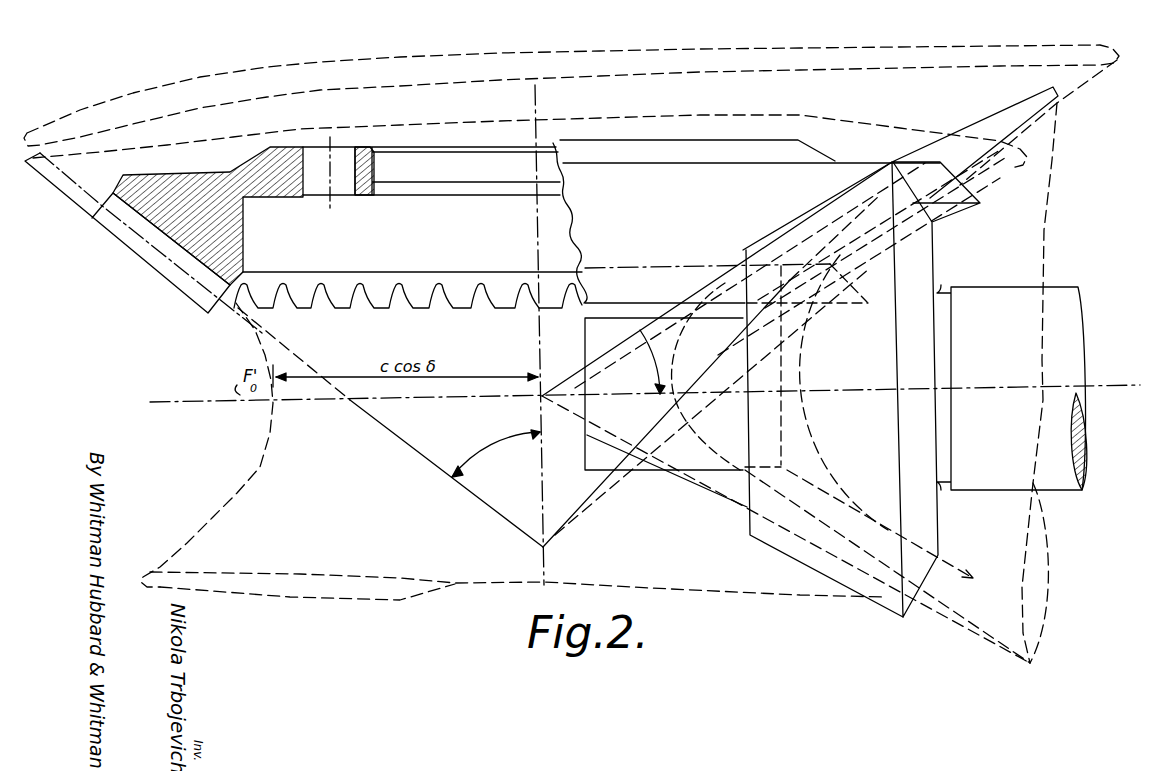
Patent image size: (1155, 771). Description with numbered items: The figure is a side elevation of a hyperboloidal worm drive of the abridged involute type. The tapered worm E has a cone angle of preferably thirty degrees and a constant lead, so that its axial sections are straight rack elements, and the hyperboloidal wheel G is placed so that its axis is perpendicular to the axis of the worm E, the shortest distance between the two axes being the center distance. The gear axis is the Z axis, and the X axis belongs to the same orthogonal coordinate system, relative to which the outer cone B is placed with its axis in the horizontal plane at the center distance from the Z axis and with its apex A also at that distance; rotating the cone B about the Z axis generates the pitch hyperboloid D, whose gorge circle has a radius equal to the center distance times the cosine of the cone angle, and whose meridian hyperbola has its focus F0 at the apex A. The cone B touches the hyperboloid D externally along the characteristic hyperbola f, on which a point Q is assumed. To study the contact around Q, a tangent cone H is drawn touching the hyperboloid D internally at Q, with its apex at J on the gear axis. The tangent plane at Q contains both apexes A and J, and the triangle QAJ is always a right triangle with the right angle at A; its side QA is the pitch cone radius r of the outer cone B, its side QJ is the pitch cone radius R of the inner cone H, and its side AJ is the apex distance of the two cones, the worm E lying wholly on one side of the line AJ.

The tangent cone H is at (772, 52).
The cone B is at (1055, 612).
The X axis X is at (652, 387).
The Z axis Z is at (545, 103).
The hyperboloidal wheel G is at (197, 305).
The pitch cone radius of the inner cone R is at (807, 490).
The apex of cone A is at (543, 392).
The pitch cone radius of the outer cone r is at (680, 326).
The characteristic hyperbola f is at (722, 356).
The focus of the meridian hyperbola F0 is at (836, 395).
The apex of the tangent cone J is at (538, 547).
The point on the characteristic hyperbola Q is at (836, 234).
The tapered worm E is at (778, 490).
The pitch hyperboloid D is at (810, 598).